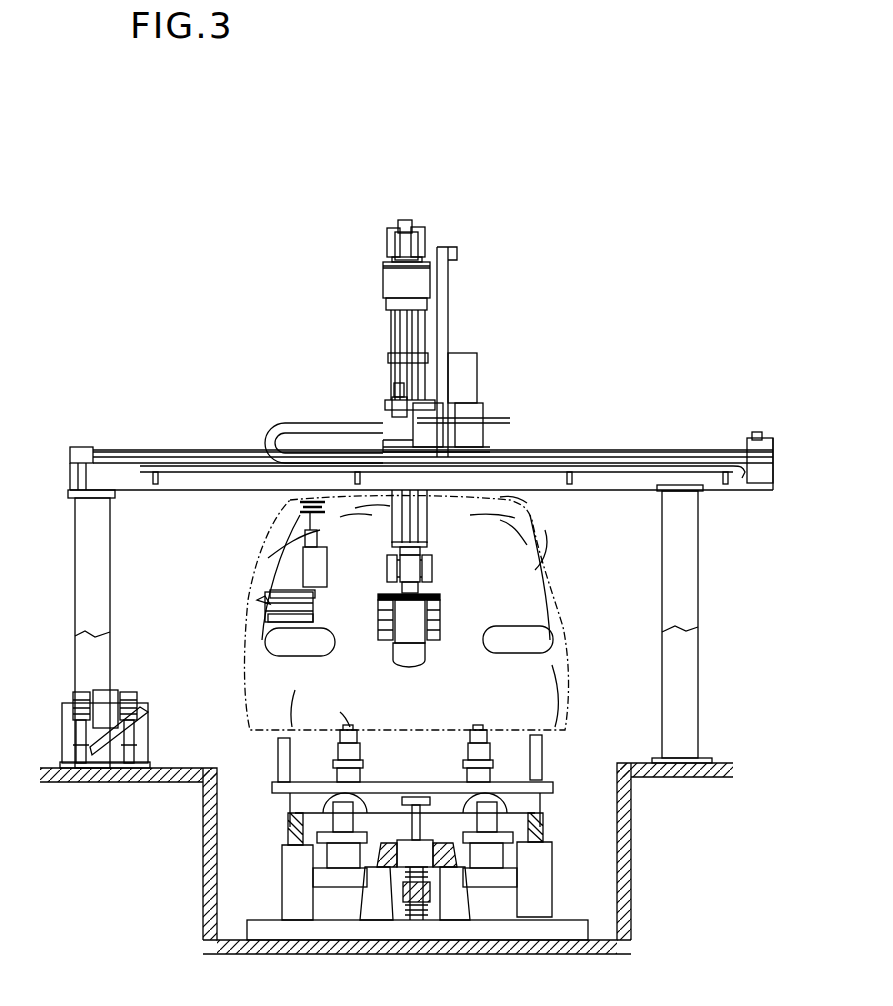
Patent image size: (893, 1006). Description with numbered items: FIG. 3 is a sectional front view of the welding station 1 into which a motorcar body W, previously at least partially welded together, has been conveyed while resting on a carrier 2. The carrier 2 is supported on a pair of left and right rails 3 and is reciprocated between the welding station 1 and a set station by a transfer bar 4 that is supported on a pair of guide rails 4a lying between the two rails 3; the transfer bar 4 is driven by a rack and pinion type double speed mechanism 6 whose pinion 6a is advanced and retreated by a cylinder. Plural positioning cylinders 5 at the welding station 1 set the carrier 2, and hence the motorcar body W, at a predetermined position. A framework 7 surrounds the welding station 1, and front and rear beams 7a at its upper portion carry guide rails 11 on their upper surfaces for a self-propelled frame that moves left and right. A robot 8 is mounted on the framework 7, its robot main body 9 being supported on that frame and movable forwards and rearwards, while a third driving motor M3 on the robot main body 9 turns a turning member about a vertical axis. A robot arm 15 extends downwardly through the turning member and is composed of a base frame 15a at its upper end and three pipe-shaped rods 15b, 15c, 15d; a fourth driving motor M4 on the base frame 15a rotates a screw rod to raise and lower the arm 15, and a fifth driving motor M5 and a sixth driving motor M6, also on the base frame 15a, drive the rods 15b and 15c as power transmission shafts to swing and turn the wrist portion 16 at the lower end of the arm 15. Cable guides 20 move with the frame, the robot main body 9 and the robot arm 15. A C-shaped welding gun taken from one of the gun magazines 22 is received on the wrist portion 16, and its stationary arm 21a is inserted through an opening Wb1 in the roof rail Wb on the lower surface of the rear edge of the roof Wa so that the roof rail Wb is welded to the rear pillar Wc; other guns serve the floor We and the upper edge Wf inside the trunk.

The welding station 1 is at (632, 584).
The carrier 2 is at (528, 798).
The rails 3 is at (292, 835).
The transfer bar 4 is at (410, 843).
The guide rails 4a is at (443, 843).
The positioning cylinders 5 is at (337, 857).
The rack and pinion type double speed mechanism 6 is at (407, 907).
The pinion 6a is at (423, 903).
The framework 7 is at (722, 520).
The beams 7a is at (178, 488).
The robot 8 is at (374, 366).
The robot main body 9 is at (443, 410).
The guide rails 11 is at (647, 452).
The robot arm 15 is at (444, 504).
The base frame 15a is at (390, 285).
The first rod 15b is at (410, 527).
The second rod 15c is at (388, 548).
The third rod 15d is at (430, 547).
The wrist portion 16 is at (443, 577).
The cable guides 20 is at (320, 432).
The stationary arm 21a is at (300, 507).
The gun magazines 22 is at (140, 760).
The third driving motor M3 is at (392, 398).
The fourth driving motor M4 is at (405, 222).
The fifth driving motor M5 is at (420, 232).
The sixth driving motor M6 is at (390, 232).
The motorcar body W is at (573, 638).
The roof Wa is at (527, 502).
The roof rail Wb is at (377, 513).
The opening Wb1 is at (360, 528).
The rear pillar Wc is at (270, 562).
The floor We is at (347, 710).
The upper edge Wf is at (263, 602).